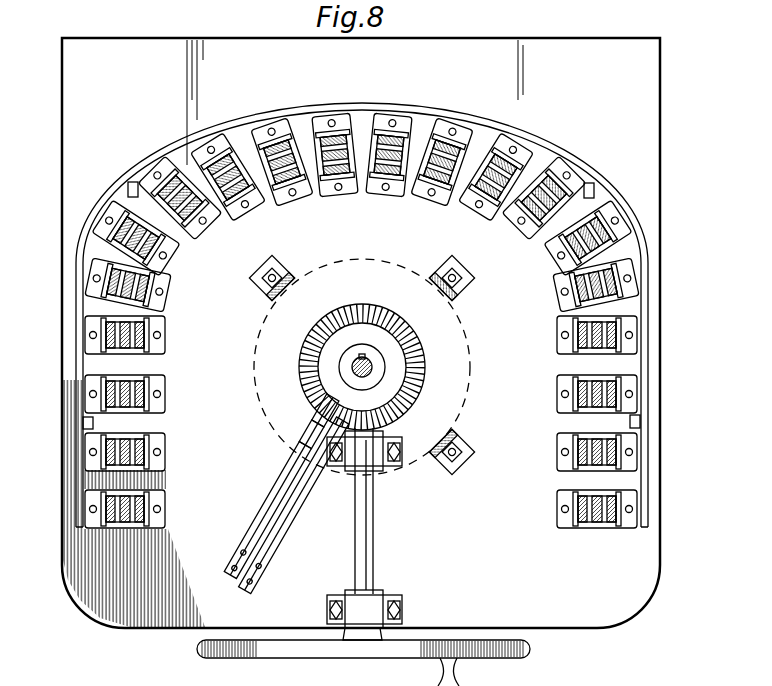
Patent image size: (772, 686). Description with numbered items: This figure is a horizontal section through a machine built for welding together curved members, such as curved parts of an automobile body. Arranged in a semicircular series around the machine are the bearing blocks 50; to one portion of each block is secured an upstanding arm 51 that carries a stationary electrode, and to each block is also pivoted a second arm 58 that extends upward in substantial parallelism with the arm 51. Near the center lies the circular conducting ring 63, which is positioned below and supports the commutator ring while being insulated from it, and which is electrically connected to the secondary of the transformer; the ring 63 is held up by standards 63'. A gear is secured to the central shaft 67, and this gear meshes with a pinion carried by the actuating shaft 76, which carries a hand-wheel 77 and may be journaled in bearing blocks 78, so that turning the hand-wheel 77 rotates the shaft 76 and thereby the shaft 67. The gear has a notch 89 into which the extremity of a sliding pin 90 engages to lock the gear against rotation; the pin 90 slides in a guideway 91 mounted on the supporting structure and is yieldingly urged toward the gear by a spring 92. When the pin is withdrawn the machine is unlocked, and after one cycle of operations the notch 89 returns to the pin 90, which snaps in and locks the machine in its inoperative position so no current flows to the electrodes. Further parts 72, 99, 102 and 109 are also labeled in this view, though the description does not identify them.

The bearing blocks 50 is at (383, 196).
The upstanding arm 51 is at (557, 163).
The second arm 58 is at (570, 447).
The circular conducting ring 63 is at (382, 367).
The standards 63' is at (365, 367).
The shaft 67 is at (373, 367).
The gear 72 is at (412, 343).
The actuating shaft 76 is at (370, 525).
The hand-wheel 77 is at (498, 660).
The bearing blocks 78 is at (378, 466).
The notch 89 is at (325, 416).
The sliding pin 90 is at (312, 438).
The guideway 91 is at (280, 488).
The spring 92 is at (290, 511).
The cabinet 99 is at (622, 601).
The stop block 102 is at (612, 208).
The track 109 is at (256, 117).